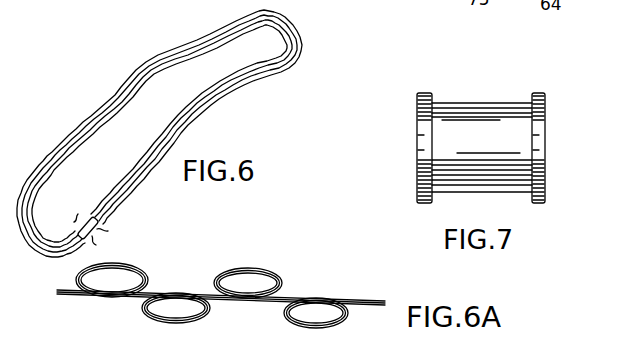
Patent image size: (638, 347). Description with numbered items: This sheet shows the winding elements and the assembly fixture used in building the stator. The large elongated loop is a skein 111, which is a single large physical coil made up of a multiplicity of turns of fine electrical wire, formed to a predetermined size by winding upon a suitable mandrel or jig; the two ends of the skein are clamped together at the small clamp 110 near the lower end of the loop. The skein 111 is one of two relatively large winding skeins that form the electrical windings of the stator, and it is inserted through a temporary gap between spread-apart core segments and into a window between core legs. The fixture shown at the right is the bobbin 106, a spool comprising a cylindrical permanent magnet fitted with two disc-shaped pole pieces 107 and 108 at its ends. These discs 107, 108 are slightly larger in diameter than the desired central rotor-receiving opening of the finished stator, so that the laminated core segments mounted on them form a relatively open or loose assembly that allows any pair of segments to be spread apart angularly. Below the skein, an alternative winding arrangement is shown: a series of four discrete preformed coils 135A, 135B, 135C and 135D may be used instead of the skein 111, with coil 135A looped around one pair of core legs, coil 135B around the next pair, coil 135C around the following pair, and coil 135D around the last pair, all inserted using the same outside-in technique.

In FIG. 6, the skein 111 is at (213, 98).
In FIG. 6, the clamp 110 is at (80, 221).
In FIG. 7, the bobbin 106 is at (493, 111).
In FIG. 7, the pole piece 107 is at (418, 106).
In FIG. 7, the pole piece 108 is at (541, 113).
In FIG. 6A, the preformed coil 135A is at (134, 273).
In FIG. 6A, the preformed coil 135B is at (180, 292).
In FIG. 6A, the preformed coil 135C is at (270, 275).
In FIG. 6A, the preformed coil 135D is at (336, 299).